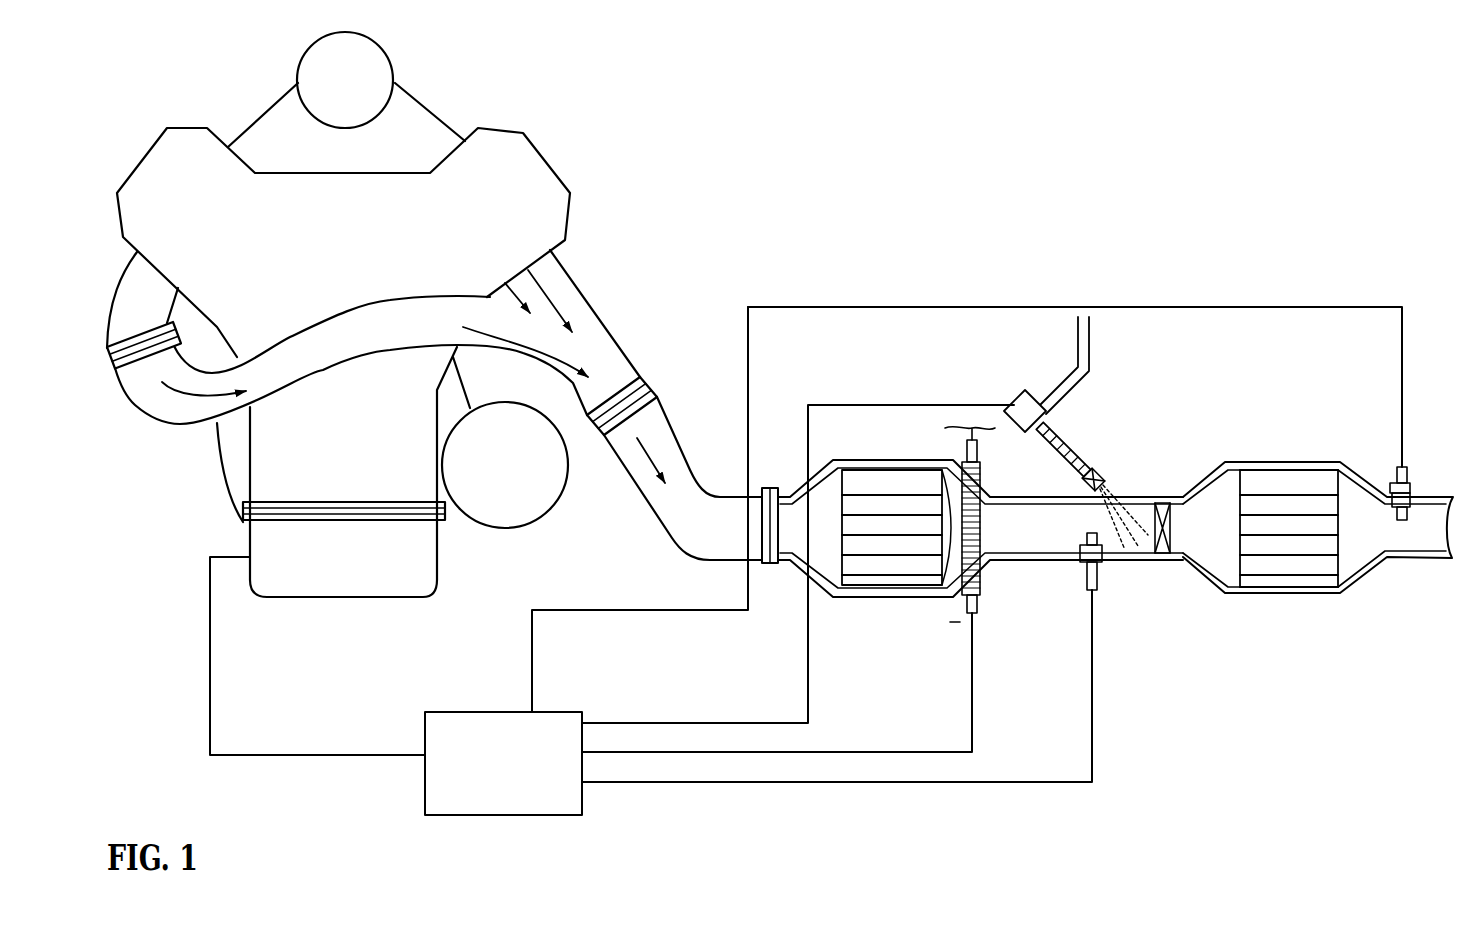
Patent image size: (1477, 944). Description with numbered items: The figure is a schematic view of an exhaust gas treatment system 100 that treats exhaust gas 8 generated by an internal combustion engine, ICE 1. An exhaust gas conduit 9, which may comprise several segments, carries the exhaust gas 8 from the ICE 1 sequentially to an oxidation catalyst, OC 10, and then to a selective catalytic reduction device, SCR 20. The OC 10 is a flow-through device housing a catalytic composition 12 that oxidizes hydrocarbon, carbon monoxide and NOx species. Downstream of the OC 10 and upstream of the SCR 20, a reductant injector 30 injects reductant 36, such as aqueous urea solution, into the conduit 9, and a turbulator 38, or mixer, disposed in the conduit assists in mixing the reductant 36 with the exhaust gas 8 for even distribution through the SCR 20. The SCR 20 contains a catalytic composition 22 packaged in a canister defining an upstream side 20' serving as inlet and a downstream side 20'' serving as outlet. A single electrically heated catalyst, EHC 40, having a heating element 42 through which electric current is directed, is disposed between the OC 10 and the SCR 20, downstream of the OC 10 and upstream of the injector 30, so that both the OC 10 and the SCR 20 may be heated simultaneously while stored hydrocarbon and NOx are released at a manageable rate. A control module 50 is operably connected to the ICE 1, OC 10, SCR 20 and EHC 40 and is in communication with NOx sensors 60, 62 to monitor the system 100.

The internal combustion engine 1 is at (505, 128).
The exhaust gas 8 is at (637, 440).
The exhaust gas conduit 9 is at (600, 317).
The oxidation catalyst 10 is at (873, 603).
The catalytic composition 12 is at (887, 482).
The selective catalytic reduction device 20 is at (1318, 481).
The upstream side 20' is at (1254, 563).
The downstream side 20'' is at (1328, 563).
The catalytic composition 22 is at (1302, 485).
The reductant injector 30 is at (1070, 443).
The reductant 36 is at (1125, 493).
The turbulator 38 is at (1170, 533).
The electrically heated catalyst 40 is at (988, 600).
The heating element 42 is at (980, 543).
The control module 50 is at (455, 711).
The NOx sensor 60 is at (1097, 570).
The NOx sensor 62 is at (1410, 470).
The exhaust gas treatment system 100 is at (1375, 226).